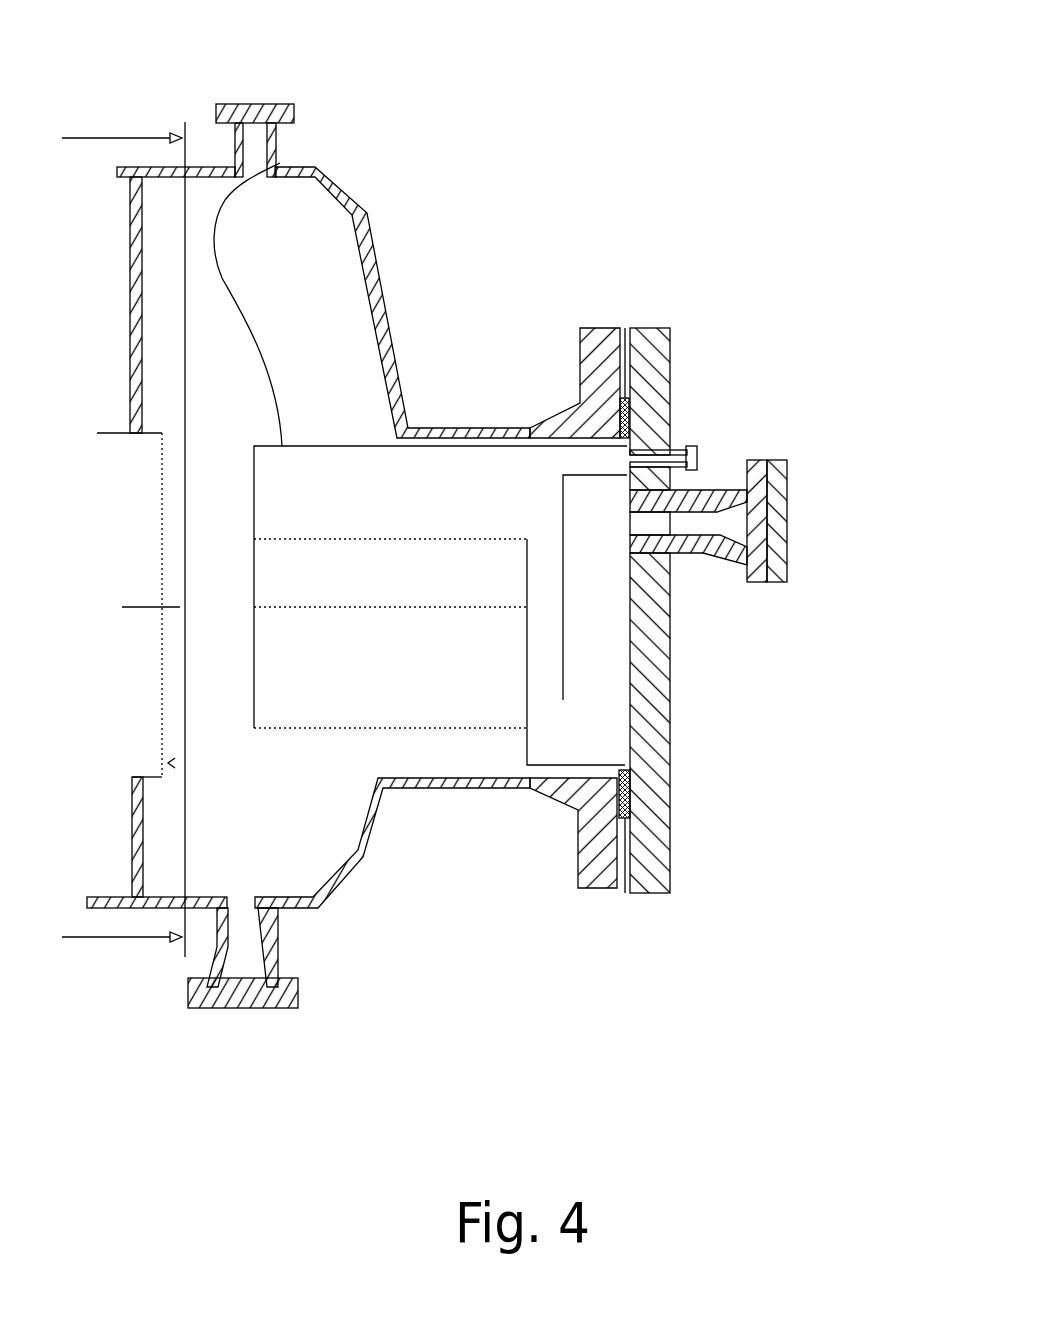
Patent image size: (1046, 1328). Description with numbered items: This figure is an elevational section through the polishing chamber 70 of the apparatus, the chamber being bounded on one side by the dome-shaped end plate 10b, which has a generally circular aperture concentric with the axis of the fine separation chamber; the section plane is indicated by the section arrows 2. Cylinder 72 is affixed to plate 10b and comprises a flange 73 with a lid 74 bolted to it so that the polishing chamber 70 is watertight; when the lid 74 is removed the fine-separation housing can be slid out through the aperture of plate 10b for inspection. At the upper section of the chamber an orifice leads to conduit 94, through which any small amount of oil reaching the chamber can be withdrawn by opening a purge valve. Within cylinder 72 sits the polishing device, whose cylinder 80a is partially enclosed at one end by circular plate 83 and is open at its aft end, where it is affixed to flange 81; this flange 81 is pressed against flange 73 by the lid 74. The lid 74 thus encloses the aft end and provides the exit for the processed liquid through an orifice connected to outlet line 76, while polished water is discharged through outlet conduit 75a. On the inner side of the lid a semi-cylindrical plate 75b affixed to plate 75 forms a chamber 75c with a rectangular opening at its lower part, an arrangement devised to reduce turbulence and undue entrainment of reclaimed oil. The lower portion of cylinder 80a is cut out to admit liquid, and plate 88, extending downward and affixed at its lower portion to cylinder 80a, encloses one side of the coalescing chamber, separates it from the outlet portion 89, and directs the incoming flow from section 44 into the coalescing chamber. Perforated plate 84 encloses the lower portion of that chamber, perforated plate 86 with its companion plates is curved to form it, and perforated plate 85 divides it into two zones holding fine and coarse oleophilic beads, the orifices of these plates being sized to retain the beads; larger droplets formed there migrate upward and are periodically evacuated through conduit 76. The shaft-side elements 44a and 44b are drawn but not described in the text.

The section line 2 is at (80, 134).
The conduit 94 is at (232, 104).
The cylinder 80a is at (280, 163).
The polishing chamber 70 is at (255, 252).
The end plate 10b is at (300, 285).
The perforated plate 85 is at (278, 607).
The perforated plate 86 is at (347, 533).
The cylinder 72 is at (440, 427).
The plate 75 is at (563, 500).
The semi-cylindrical plate 75b is at (624, 400).
The chamber 75c is at (583, 547).
The outlet line 76 is at (697, 463).
The outlet conduit 75a is at (717, 512).
The plate 88 is at (530, 648).
The perforated plate 84 is at (482, 728).
The outlet portion 89 is at (563, 718).
The lid 74 is at (670, 847).
The flange 81 is at (625, 893).
The flange 73 is at (603, 873).
The lower rotor part 44b is at (439, 741).
The plate 83 is at (318, 908).
The section 44 is at (255, 639).
The shaft flange 44a is at (205, 970).